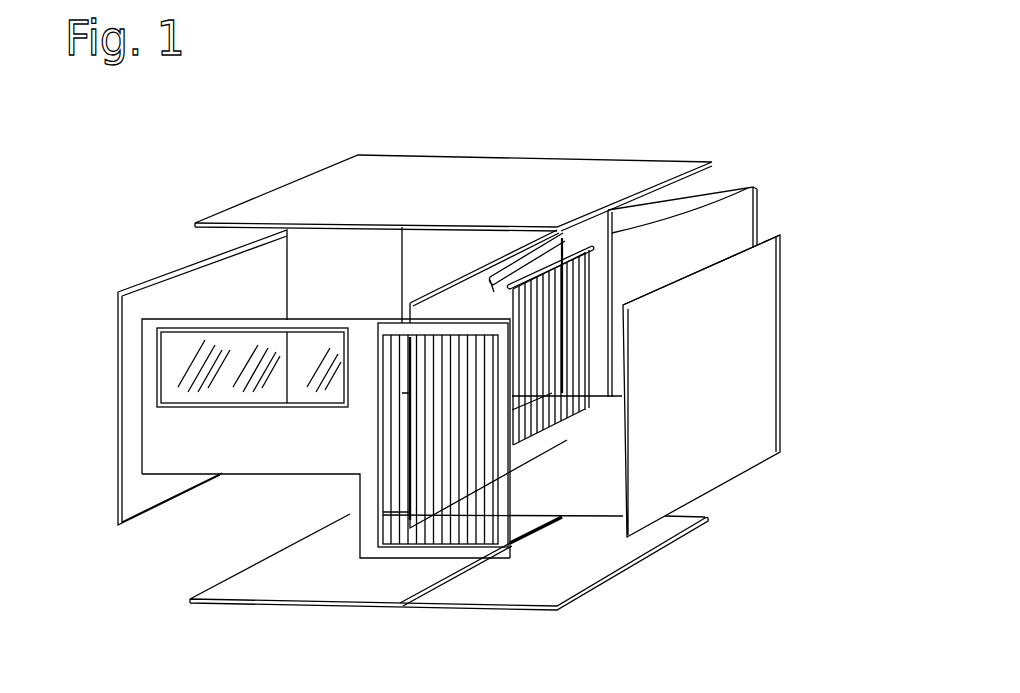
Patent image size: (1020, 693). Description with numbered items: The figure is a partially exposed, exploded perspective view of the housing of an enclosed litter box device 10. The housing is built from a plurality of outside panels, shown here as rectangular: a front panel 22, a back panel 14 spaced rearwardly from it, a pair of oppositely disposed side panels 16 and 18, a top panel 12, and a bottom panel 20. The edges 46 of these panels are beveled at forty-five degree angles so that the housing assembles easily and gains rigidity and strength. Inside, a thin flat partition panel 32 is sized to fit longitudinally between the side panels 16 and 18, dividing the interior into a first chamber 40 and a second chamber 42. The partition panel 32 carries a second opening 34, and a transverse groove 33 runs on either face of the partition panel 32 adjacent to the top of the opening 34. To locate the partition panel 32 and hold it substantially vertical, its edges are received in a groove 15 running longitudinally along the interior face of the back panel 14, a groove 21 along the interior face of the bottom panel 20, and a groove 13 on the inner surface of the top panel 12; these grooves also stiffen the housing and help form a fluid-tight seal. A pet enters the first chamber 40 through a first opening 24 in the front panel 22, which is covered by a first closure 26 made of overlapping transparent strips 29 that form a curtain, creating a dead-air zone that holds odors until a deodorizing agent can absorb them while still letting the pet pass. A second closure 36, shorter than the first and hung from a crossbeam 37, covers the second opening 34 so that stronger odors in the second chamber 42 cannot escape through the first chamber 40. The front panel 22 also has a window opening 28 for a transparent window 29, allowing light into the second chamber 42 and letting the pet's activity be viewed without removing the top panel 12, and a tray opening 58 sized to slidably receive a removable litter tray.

The enclosed litter box device 10 is at (680, 148).
The top panel 12 is at (318, 185).
The groove 13 is at (397, 225).
The back panel 14 is at (725, 243).
The groove 15 is at (726, 207).
The side panel 16 is at (180, 302).
The side panel 18 is at (717, 367).
The bottom panel 20 is at (282, 575).
The groove 21 is at (550, 522).
The front panel 22 is at (315, 443).
The first opening 24 is at (380, 510).
The first closure 26 is at (475, 535).
The window opening 28 is at (268, 405).
The strips 29 is at (447, 636).
The partition panel 32 is at (430, 258).
The transverse groove 33 is at (495, 283).
The second opening 34 is at (553, 270).
The second closure 36 is at (585, 268).
The crossbeam 37 is at (513, 270).
The first chamber 40 is at (762, 236).
The second chamber 42 is at (318, 301).
The edges 46 is at (128, 525).
The tray opening 58 is at (353, 532).